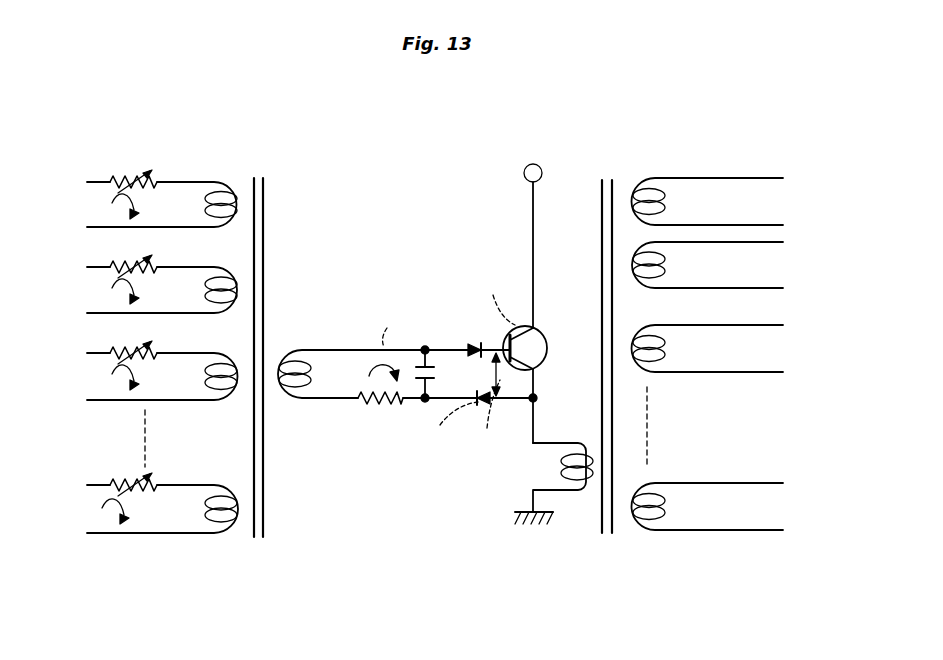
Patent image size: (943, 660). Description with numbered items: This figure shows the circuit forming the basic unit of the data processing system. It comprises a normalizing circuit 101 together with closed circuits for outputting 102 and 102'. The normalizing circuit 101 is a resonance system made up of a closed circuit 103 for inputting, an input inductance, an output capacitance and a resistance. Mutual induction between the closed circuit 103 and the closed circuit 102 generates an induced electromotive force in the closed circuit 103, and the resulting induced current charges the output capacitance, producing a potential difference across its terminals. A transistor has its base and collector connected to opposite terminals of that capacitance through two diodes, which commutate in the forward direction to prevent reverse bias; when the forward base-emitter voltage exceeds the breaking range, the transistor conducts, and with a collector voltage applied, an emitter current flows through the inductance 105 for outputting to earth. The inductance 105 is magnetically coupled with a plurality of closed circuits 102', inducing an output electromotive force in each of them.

The normalizing circuit 101 is at (424, 278).
The closed circuit for outputting 102 is at (157, 310).
The closed circuit for outputting 102' is at (700, 308).
The closed circuit for inputting 103 is at (331, 402).
The inductance for outputting 105 is at (578, 492).